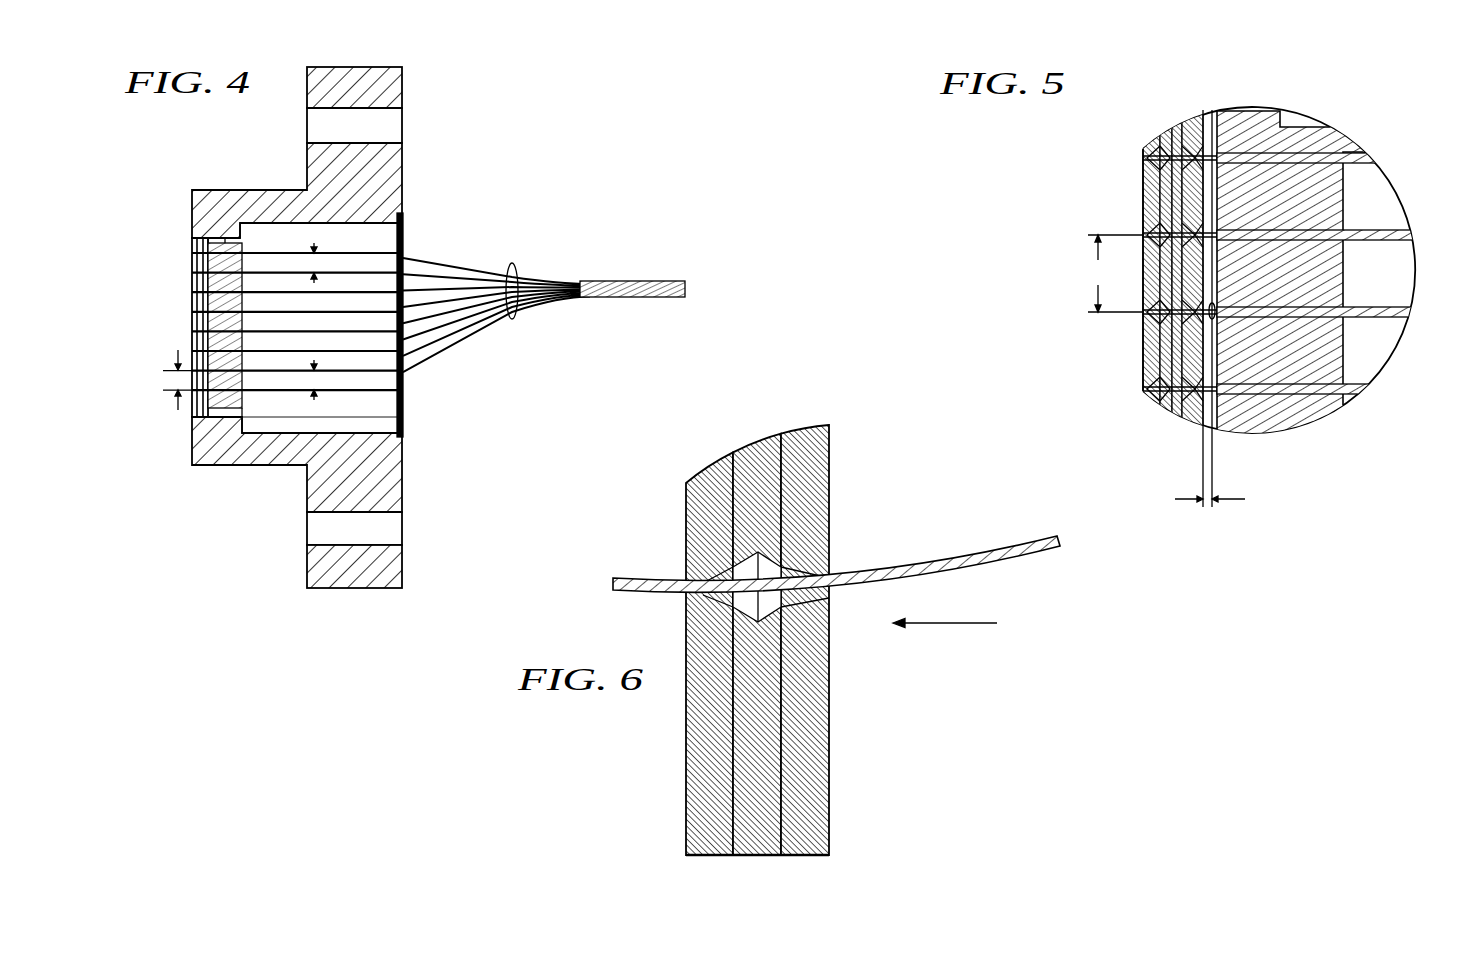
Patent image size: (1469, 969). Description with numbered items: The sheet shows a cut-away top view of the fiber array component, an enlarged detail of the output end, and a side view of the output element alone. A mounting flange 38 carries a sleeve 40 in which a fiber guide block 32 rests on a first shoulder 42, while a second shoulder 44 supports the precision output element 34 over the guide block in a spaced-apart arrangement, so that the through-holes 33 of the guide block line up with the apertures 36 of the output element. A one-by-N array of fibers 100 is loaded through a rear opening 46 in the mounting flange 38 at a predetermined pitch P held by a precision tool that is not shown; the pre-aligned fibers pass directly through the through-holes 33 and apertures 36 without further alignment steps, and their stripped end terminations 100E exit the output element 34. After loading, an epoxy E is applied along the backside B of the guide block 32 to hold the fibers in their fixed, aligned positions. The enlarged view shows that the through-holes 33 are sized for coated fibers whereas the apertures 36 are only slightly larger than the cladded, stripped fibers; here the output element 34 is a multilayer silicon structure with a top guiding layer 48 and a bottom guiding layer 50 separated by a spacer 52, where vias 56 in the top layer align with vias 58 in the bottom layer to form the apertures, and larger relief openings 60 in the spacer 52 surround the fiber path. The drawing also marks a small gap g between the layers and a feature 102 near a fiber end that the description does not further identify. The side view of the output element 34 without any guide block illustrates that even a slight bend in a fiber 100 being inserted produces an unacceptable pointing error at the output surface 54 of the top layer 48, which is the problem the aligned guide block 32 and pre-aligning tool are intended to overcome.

In FIG. 4, the fiber guide block 32 is at (215, 412).
In FIG. 5, the fiber guide block 32 is at (1318, 140).
In FIG. 4, the through-holes 33 is at (233, 417).
In FIG. 5, the through-holes 33 is at (1343, 152).
In FIG. 4, the precision output element 34 is at (191, 240).
In FIG. 5, the precision output element 34 is at (1263, 282).
In FIG. 6, the precision output element 34 is at (760, 609).
In FIG. 5, the apertures 36 is at (1143, 158).
In FIG. 4, the mounting flange 38 is at (402, 178).
In FIG. 4, the sleeve 40 is at (277, 452).
In FIG. 4, the first shoulder 42 is at (243, 234).
In FIG. 4, the second shoulder 44 is at (211, 237).
In FIG. 4, the rear opening 46 is at (384, 396).
In FIG. 5, the top guiding layer 48 is at (1143, 348).
In FIG. 6, the top guiding layer 48 is at (690, 512).
In FIG. 5, the bottom guiding layer 50 is at (1203, 127).
In FIG. 6, the bottom guiding layer 50 is at (823, 478).
In FIG. 5, the spacer 52 is at (1170, 410).
In FIG. 6, the spacer 52 is at (766, 788).
In FIG. 5, the output surface 54 is at (1143, 322).
In FIG. 5, the vias 56 is at (1152, 148).
In FIG. 5, the vias 58 is at (1198, 395).
In FIG. 5, the relief openings 60 is at (1145, 385).
In FIG. 4, the fibers 100 is at (511, 262).
In FIG. 5, the fibers 100 is at (1395, 306).
In FIG. 6, the fibers 100 is at (990, 555).
In FIG. 5, the stripped end terminations 100E is at (1143, 233).
In FIG. 5, the fiber core 102 is at (1212, 318).
In FIG. 4, the pitch P is at (313, 265).
In FIG. 5, the pitch P is at (1115, 273).
In FIG. 4, the epoxy E is at (242, 381).
In FIG. 4, the backside B is at (243, 405).
In FIG. 5, the gap width g is at (1210, 517).